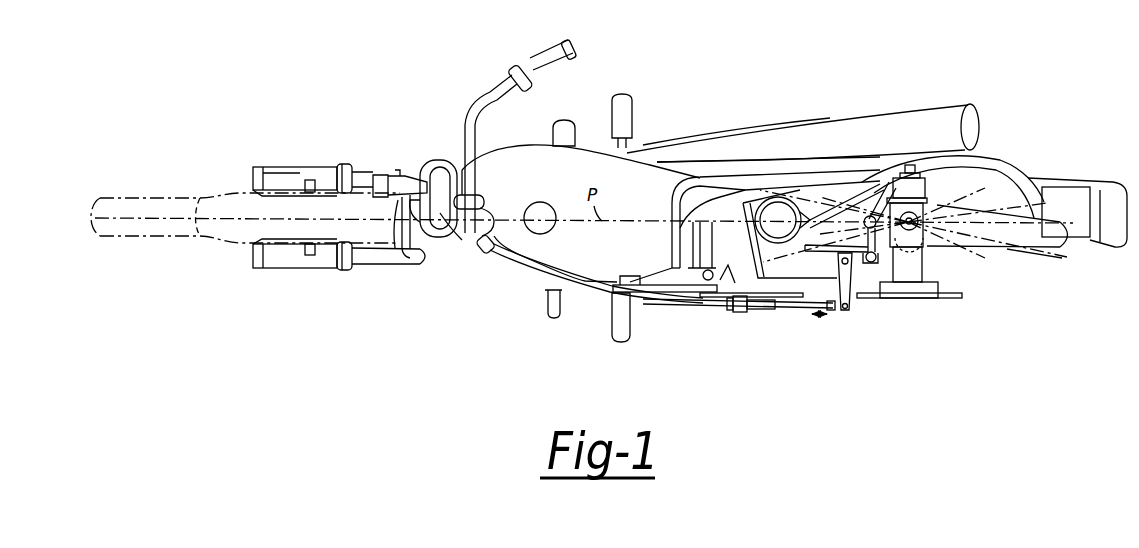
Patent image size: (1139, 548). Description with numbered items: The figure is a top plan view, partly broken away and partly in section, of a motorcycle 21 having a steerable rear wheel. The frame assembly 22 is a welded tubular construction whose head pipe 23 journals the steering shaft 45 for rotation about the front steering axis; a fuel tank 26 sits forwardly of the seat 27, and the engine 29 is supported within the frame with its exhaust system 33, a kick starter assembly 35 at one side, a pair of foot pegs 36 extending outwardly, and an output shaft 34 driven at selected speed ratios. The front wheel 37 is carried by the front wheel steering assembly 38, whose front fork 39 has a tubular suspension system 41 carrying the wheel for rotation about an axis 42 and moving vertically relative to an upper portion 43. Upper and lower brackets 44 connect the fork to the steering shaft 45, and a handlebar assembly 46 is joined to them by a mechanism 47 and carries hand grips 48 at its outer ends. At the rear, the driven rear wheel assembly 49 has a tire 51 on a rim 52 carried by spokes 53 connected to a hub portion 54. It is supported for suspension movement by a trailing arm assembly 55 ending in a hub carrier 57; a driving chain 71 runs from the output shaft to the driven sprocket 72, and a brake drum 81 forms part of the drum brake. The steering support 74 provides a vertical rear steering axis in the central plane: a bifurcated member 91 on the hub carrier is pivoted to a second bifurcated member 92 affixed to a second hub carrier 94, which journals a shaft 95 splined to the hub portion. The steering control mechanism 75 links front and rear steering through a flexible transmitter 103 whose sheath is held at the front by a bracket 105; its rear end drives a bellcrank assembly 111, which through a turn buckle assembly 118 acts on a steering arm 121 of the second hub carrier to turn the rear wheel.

The motorcycle 21 is at (697, 88).
The frame assembly 22 is at (668, 286).
The head pipe 23 is at (438, 232).
The fuel tank 26 is at (508, 162).
The seat 27 is at (723, 177).
The engine 29 is at (636, 288).
The exhaust system 33 is at (752, 137).
The output shaft 34 is at (700, 284).
The kick starter assembly 35 is at (567, 122).
The foot pegs 36 is at (628, 118).
The front wheel 37 is at (140, 212).
The front wheel steering assembly 38 is at (363, 165).
The front fork 39 is at (300, 172).
The tubular suspension system 41 is at (283, 268).
The axis 42 is at (262, 243).
The upper portion 43 is at (366, 268).
The upper and lower brackets 44 is at (408, 228).
The steering shaft 45 is at (486, 214).
The handlebar assembly 46 is at (470, 122).
The mechanism 47 is at (466, 188).
The hand grips 48 is at (546, 58).
The rear wheel assembly 49 is at (1040, 250).
The tire 51 is at (781, 197).
The rim 52 is at (805, 205).
The spokes 53 is at (872, 182).
The hub portion 54 is at (912, 163).
The trailing arm assembly 55 is at (733, 268).
The hub carrier 57 is at (942, 290).
The driving chain 71 is at (852, 298).
The driven sprocket 72 is at (888, 300).
The steering support 74 is at (905, 347).
The steering control mechanism 75 is at (810, 385).
The brake drum 81 is at (922, 292).
The bifurcated member 91 is at (925, 248).
The second bifurcated member 92 is at (932, 208).
The second hub carrier 94 is at (943, 180).
The shaft 95 is at (948, 112).
The flexible transmitter 103 is at (516, 272).
The bracket 105 is at (481, 254).
The bellcrank assembly 111 is at (812, 302).
The turn buckle assembly 118 is at (842, 249).
The steering arm 121 is at (890, 178).